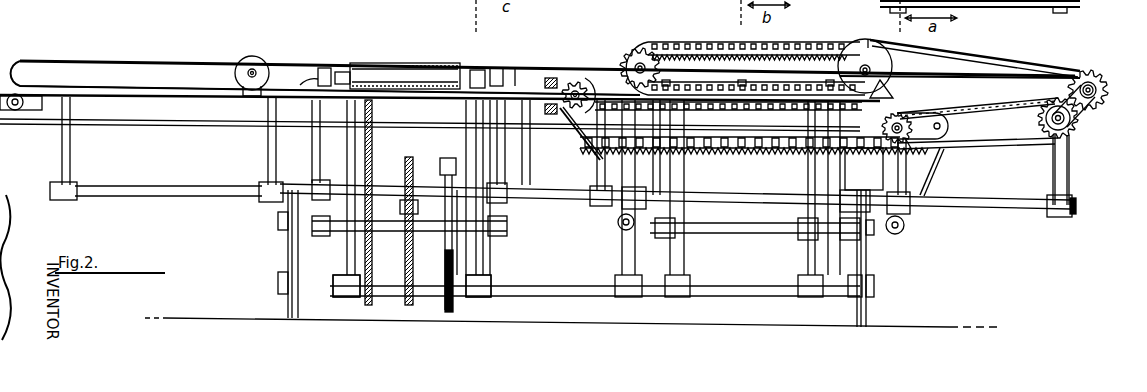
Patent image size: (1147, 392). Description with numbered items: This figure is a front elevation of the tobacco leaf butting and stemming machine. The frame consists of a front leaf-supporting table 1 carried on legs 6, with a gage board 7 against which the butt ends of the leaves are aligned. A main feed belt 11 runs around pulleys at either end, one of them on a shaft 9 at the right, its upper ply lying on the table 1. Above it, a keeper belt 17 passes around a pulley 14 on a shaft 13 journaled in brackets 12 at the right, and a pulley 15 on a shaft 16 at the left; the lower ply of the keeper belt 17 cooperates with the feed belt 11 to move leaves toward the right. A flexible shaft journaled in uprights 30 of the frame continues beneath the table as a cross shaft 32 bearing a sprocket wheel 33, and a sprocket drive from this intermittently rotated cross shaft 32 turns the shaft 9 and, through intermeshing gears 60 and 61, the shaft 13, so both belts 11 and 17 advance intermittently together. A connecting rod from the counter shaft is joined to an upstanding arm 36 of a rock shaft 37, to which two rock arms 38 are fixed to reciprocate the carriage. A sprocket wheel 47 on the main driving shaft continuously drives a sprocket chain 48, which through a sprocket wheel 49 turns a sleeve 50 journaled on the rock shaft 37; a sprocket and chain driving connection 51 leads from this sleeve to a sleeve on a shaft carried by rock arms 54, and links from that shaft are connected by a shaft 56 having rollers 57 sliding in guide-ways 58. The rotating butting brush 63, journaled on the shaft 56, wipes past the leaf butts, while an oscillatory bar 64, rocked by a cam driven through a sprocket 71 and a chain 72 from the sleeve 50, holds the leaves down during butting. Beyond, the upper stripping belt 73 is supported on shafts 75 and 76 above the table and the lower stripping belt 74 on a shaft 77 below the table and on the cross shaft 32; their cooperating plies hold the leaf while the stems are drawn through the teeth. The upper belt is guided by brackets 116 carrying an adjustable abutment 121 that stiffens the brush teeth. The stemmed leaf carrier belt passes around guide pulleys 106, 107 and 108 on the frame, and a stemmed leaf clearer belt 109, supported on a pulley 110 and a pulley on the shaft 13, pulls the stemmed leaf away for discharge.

The front leaf-supporting table 1 is at (208, 96).
The legs 6 is at (286, 261).
The gage board 7 is at (135, 61).
The shaft 9 is at (1046, 120).
The main feed belt 11 is at (176, 88).
The brackets 12 is at (1078, 2).
The shaft 13 is at (1093, 86).
The pulley 14 is at (1105, 98).
The pulley 15 is at (254, 57).
The shaft 16 is at (246, 75).
The keeper belt 17 is at (545, 71).
The uprights 30 is at (895, 176).
The cross shaft 32 is at (921, 141).
The sprocket wheel 33 is at (903, 138).
The upstanding arm 36 is at (636, 270).
The rock shaft 37 is at (520, 293).
The rock arms 38 is at (685, 257).
The sprocket wheel 47 is at (449, 160).
The sprocket chain 48 is at (458, 252).
The sprocket wheel 49 is at (456, 308).
The sleeve 50 is at (433, 275).
The sprocket and chain driving connection 51 is at (370, 303).
The rock arms 54 is at (345, 258).
The shaft 56 is at (478, 70).
The rollers 57 is at (325, 67).
The guide-ways 58 is at (312, 76).
The gear 60 is at (1076, 139).
The gear 61 is at (1078, 72).
The butting brush 63 is at (413, 62).
The bar 64 is at (384, 62).
The sprocket 71 is at (406, 158).
The chain 72 is at (406, 262).
The stripping belt 73 is at (662, 76).
The stripping belt 74 is at (720, 149).
The shaft 75 is at (640, 48).
The shaft 76 is at (865, 68).
The shaft 77 is at (570, 125).
The guide pulley 106 is at (946, 123).
The guide pulley 107 is at (905, 233).
The guide pulley 108 is at (618, 229).
The stemmed leaf clearer belt 109 is at (958, 61).
The pulley 110 is at (868, 45).
The brackets 116 is at (830, 82).
The abutment 121 is at (742, 81).